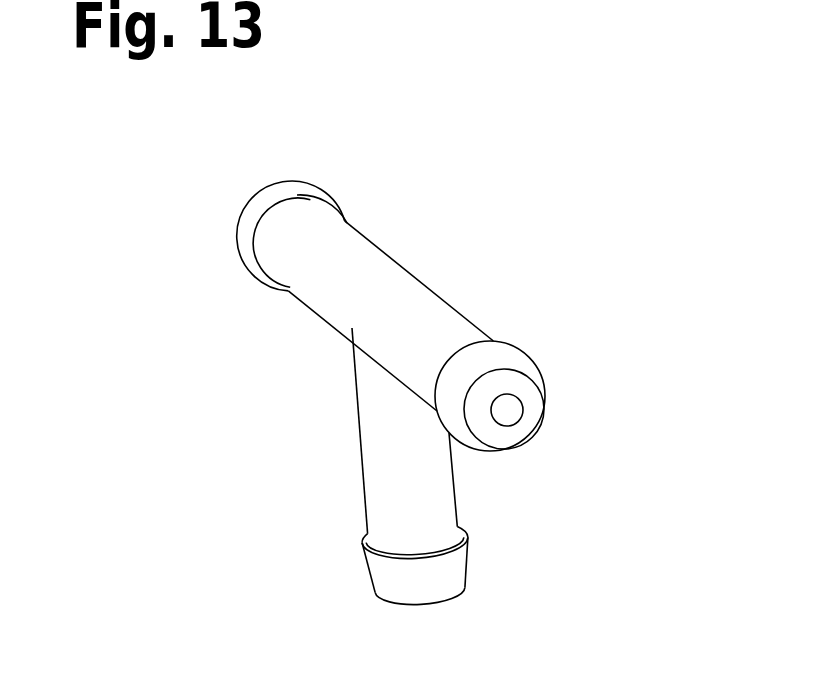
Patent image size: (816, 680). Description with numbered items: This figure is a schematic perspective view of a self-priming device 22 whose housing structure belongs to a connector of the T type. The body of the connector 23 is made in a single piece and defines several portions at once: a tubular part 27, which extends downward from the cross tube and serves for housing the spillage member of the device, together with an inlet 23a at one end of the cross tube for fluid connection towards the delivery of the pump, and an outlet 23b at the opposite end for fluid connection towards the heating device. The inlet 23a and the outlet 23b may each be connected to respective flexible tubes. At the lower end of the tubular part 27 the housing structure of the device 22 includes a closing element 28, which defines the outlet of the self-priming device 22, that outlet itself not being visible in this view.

The self-priming device 22 is at (386, 428).
The body of the connector 23 is at (386, 320).
The inlet 23a is at (535, 395).
The outlet 23b is at (240, 217).
The tubular part 27 is at (372, 433).
The closing element 28 is at (428, 593).